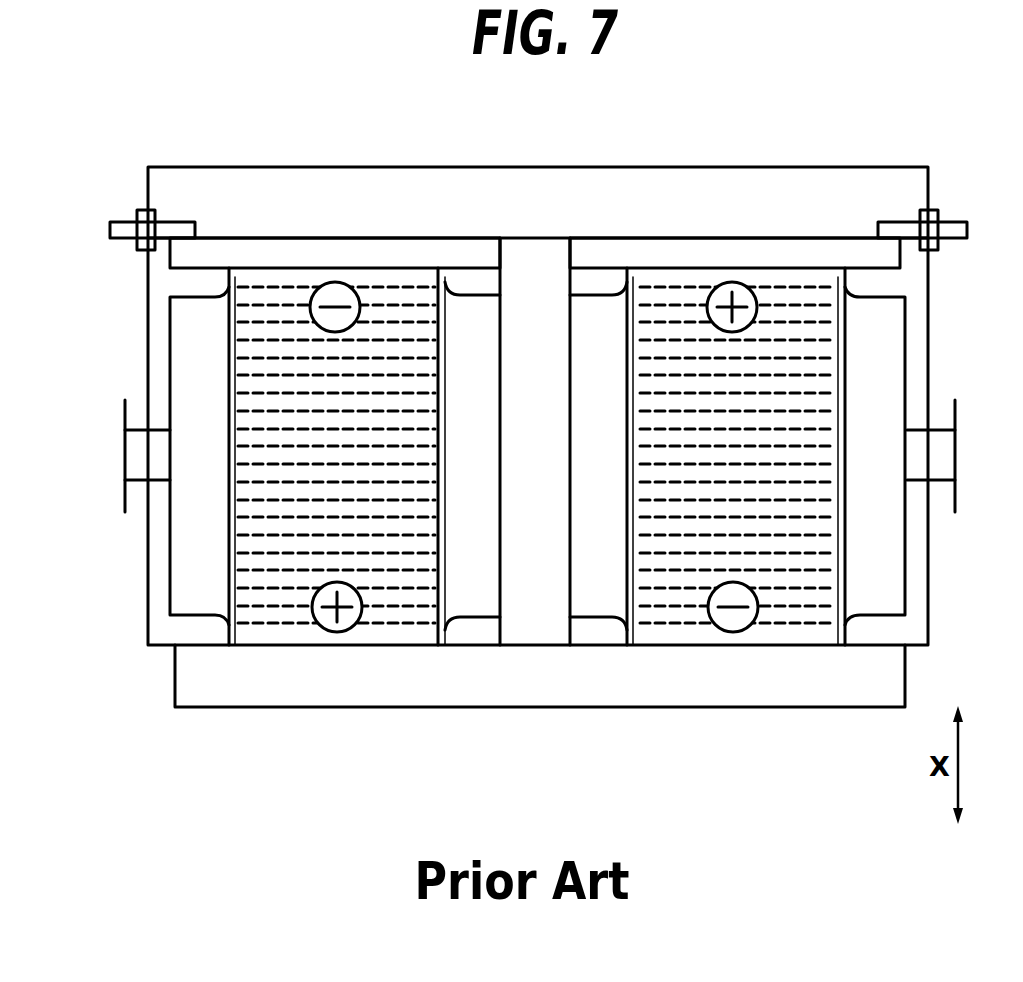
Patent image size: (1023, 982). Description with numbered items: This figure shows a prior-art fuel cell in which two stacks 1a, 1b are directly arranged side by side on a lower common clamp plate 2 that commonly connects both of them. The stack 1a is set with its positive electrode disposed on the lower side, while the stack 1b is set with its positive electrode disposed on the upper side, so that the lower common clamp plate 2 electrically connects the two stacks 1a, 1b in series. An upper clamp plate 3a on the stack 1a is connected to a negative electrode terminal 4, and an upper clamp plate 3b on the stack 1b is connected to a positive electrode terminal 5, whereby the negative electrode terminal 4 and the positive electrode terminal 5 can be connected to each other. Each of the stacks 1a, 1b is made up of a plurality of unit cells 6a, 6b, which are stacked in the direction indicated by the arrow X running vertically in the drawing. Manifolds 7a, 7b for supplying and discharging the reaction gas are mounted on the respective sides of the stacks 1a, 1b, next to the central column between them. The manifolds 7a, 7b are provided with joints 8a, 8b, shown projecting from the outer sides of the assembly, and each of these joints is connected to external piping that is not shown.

The stack 1a is at (272, 310).
The stack 1b is at (800, 310).
The lower common clamp plate 2 is at (345, 685).
The upper clamp plate 3a is at (385, 258).
The upper clamp plate 3b is at (683, 258).
The negative electrode terminal 4 is at (110, 235).
The positive electrode terminal 5 is at (967, 235).
The unit cells 6a is at (232, 582).
The unit cells 6b is at (850, 586).
The manifold 7a is at (473, 628).
The manifold 7b is at (598, 628).
The joint 8a is at (125, 450).
The joint 8b is at (955, 450).